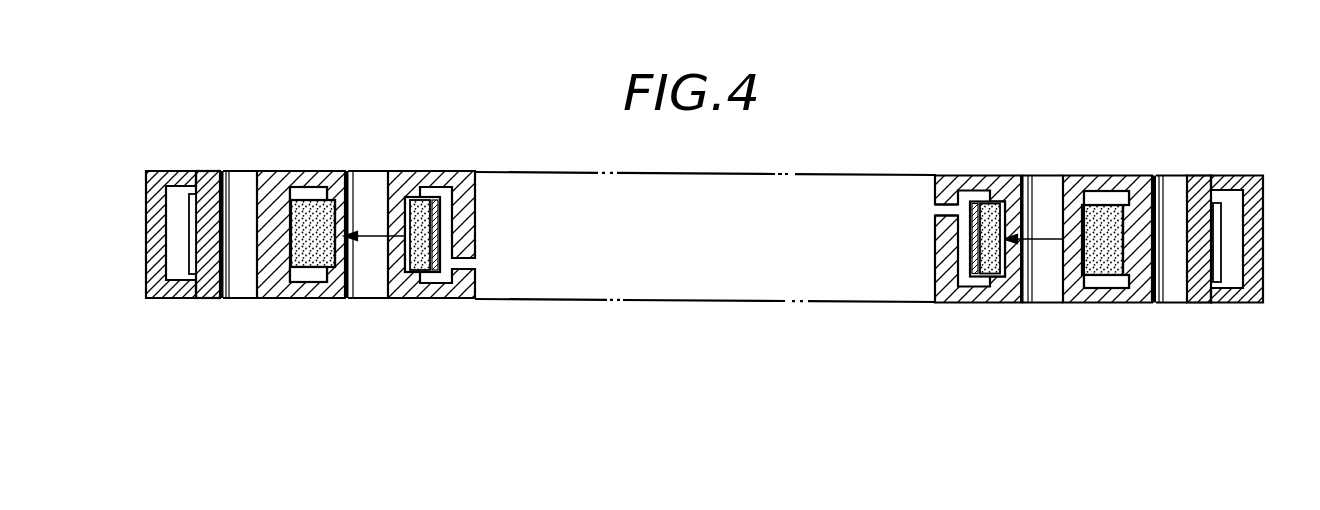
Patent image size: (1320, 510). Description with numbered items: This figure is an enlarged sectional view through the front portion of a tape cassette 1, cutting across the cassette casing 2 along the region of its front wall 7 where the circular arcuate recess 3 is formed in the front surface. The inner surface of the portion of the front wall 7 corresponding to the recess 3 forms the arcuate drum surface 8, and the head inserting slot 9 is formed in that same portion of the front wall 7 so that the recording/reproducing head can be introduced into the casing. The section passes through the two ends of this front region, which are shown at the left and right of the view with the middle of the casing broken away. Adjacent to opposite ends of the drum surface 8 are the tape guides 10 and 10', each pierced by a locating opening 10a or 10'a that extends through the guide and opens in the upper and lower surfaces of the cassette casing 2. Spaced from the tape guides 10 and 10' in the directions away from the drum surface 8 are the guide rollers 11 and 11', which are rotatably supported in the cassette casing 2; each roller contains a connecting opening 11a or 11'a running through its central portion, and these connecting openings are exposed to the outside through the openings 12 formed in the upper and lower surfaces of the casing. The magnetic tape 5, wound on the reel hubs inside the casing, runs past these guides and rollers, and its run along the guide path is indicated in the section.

The tape cassette 1 is at (1046, 52).
The cassette casing 2 is at (1221, 176).
The circular arcuate recess 3 is at (936, 285).
The magnetic tape 5 is at (190, 234).
The front wall 7 is at (477, 193).
The arcuate drum surface 8 is at (440, 190).
The head inserting slot 9 is at (478, 262).
The tape guide 10 is at (312, 286).
The tape guide 10' is at (1105, 190).
The locating opening 10a is at (366, 293).
The locating opening 10'a is at (1044, 207).
The guide roller 11 is at (317, 200).
The guide roller 11' is at (1095, 273).
The connecting opening 11a is at (261, 190).
The connecting opening 11'a is at (1187, 271).
The opening 12 is at (221, 171).